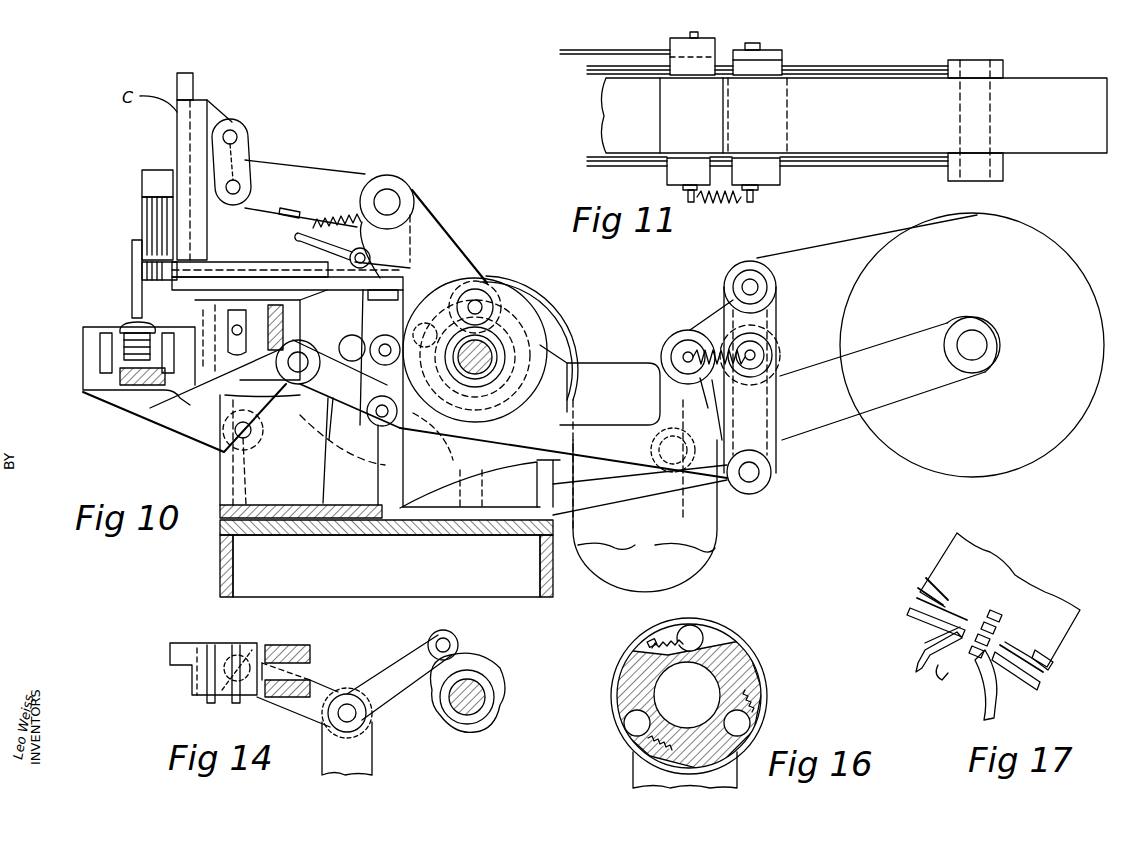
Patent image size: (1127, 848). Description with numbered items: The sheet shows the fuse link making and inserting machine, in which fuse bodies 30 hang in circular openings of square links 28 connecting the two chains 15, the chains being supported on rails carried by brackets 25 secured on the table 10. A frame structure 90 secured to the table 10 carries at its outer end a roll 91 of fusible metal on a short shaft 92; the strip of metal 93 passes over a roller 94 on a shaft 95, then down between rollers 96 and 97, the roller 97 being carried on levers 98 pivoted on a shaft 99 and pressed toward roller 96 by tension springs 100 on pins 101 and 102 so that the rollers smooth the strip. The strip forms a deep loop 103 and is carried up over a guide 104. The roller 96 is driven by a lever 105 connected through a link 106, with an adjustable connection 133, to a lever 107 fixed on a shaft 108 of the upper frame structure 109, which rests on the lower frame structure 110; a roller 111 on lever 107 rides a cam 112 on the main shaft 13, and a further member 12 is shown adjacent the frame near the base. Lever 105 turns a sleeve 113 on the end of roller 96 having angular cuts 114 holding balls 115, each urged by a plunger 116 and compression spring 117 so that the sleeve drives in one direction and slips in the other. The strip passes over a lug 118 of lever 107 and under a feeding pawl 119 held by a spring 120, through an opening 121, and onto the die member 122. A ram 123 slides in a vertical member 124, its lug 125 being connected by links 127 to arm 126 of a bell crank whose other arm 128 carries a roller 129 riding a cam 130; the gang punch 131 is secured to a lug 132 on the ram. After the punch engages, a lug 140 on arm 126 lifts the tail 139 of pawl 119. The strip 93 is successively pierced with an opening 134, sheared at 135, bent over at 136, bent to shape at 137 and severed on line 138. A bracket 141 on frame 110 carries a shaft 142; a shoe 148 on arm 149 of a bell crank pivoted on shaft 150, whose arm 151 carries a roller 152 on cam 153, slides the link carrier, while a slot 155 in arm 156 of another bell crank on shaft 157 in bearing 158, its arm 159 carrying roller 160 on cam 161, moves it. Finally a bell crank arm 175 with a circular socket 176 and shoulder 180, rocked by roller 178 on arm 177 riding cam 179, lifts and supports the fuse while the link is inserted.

In FIG. 10, the table 10 is at (480, 535).
In FIG. 10, the bracket 12 is at (476, 454).
In FIG. 10, the main shaft 13 is at (492, 357).
In FIG. 14, the main shaft 13 is at (480, 685).
In FIG. 10, the chains 15 is at (84, 343).
In FIG. 10, the brackets 25 is at (90, 380).
In FIG. 10, the square links 28 is at (112, 326).
In FIG. 10, the fuse bodies 30 is at (124, 345).
In FIG. 10, the frame structure 90 is at (888, 378).
In FIG. 11, the frame structure 90 is at (878, 72).
In FIG. 10, the roll of fusible metal 91 is at (972, 345).
In FIG. 10, the short shaft 92 is at (985, 342).
In FIG. 11, the short shaft 92 is at (992, 60).
In FIG. 10, the strip of metal 93 is at (545, 298).
In FIG. 11, the strip of metal 93 is at (854, 115).
In FIG. 17, the strip of metal 93 is at (1000, 600).
In FIG. 10, the roller 94 is at (746, 262).
In FIG. 11, the roller 94 is at (782, 124).
In FIG. 10, the shaft 95 is at (758, 287).
In FIG. 10, the roller 96 is at (660, 356).
In FIG. 11, the roller 96 is at (668, 143).
In FIG. 16, the roller 96 is at (767, 672).
In FIG. 10, the roller 97 is at (768, 355).
In FIG. 10, the levers 98 is at (750, 380).
In FIG. 11, the levers 98 is at (783, 50).
In FIG. 10, the shaft 99 is at (760, 474).
In FIG. 10, the tension springs 100 is at (708, 320).
In FIG. 11, the tension springs 100 is at (712, 203).
In FIG. 11, the pin 101 is at (682, 40).
In FIG. 11, the pin 102 is at (768, 44).
In FIG. 10, the deep loop 103 is at (645, 516).
In FIG. 10, the guide 104 is at (500, 330).
In FIG. 10, the lever 105 is at (672, 395).
In FIG. 16, the lever 105 is at (638, 776).
In FIG. 10, the link 106 is at (563, 471).
In FIG. 11, the link 106 is at (615, 41).
In FIG. 10, the lever 107 is at (381, 398).
In FIG. 10, the shaft 108 is at (392, 200).
In FIG. 10, the upper frame structure 109 is at (308, 165).
In FIG. 10, the lower frame structure 110 is at (260, 450).
In FIG. 10, the roller 111 is at (372, 340).
In FIG. 10, the cam 112 is at (556, 370).
In FIG. 11, the sleeve 113 is at (708, 56).
In FIG. 16, the sleeve 113 is at (633, 677).
In FIG. 16, the angular cuts 114 is at (715, 640).
In FIG. 16, the balls 115 is at (692, 626).
In FIG. 16, the plunger 116 is at (668, 640).
In FIG. 16, the compression spring 117 is at (655, 640).
In FIG. 10, the lug 118 is at (382, 298).
In FIG. 10, the feeding pawl 119 is at (398, 268).
In FIG. 10, the spring 120 is at (366, 180).
In FIG. 10, the opening 121 is at (244, 262).
In FIG. 10, the die member 122 is at (131, 290).
In FIG. 10, the ram 123 is at (194, 85).
In FIG. 10, the vertical member 124 is at (197, 117).
In FIG. 10, the lug 125 is at (248, 137).
In FIG. 10, the arm of bell crank 126 is at (312, 187).
In FIG. 10, the links 127 is at (240, 162).
In FIG. 10, the arm of bell crank 128 is at (466, 296).
In FIG. 10, the roller 129 is at (487, 290).
In FIG. 10, the cam 130 is at (510, 340).
In FIG. 10, the gang punch 131 is at (150, 222).
In FIG. 10, the lug 132 is at (157, 183).
In FIG. 10, the adjustable connection 133 is at (677, 472).
In FIG. 17, the opening 134 is at (1003, 612).
In FIG. 17, the sheared portions 135 is at (932, 580).
In FIG. 17, the bent-over ends 136 is at (912, 600).
In FIG. 17, the bent shape 137 is at (988, 690).
In FIG. 17, the cut-off line 138 is at (950, 634).
In FIG. 10, the tail 139 is at (325, 250).
In FIG. 10, the lug 140 is at (284, 207).
In FIG. 10, the bracket 141 is at (314, 225).
In FIG. 14, the bracket 141 is at (298, 645).
In FIG. 14, the shaft 142 is at (312, 667).
In FIG. 10, the shoe 148 is at (226, 260).
In FIG. 10, the arm of bell crank 149 is at (195, 430).
In FIG. 10, the shaft 150 is at (243, 457).
In FIG. 10, the arm of bell crank 151 is at (384, 468).
In FIG. 10, the roller 152 is at (430, 315).
In FIG. 10, the cam 153 is at (565, 393).
In FIG. 14, the slot 155 is at (254, 645).
In FIG. 14, the arm of bell crank 156 is at (295, 708).
In FIG. 10, the shaft 157 is at (320, 352).
In FIG. 14, the shaft 157 is at (357, 715).
In FIG. 10, the bearing 158 is at (350, 451).
In FIG. 14, the bearing 158 is at (347, 748).
In FIG. 14, the arm of bell crank 159 is at (399, 677).
In FIG. 14, the roller 160 is at (458, 640).
In FIG. 14, the cam 161 is at (502, 700).
In FIG. 10, the arm of bell crank 175 is at (185, 410).
In FIG. 10, the circular socket 176 is at (118, 385).
In FIG. 10, the arm of bell crank 177 is at (346, 384).
In FIG. 10, the roller 178 is at (420, 433).
In FIG. 10, the cam 179 is at (545, 337).
In FIG. 10, the shoulder 180 is at (143, 385).